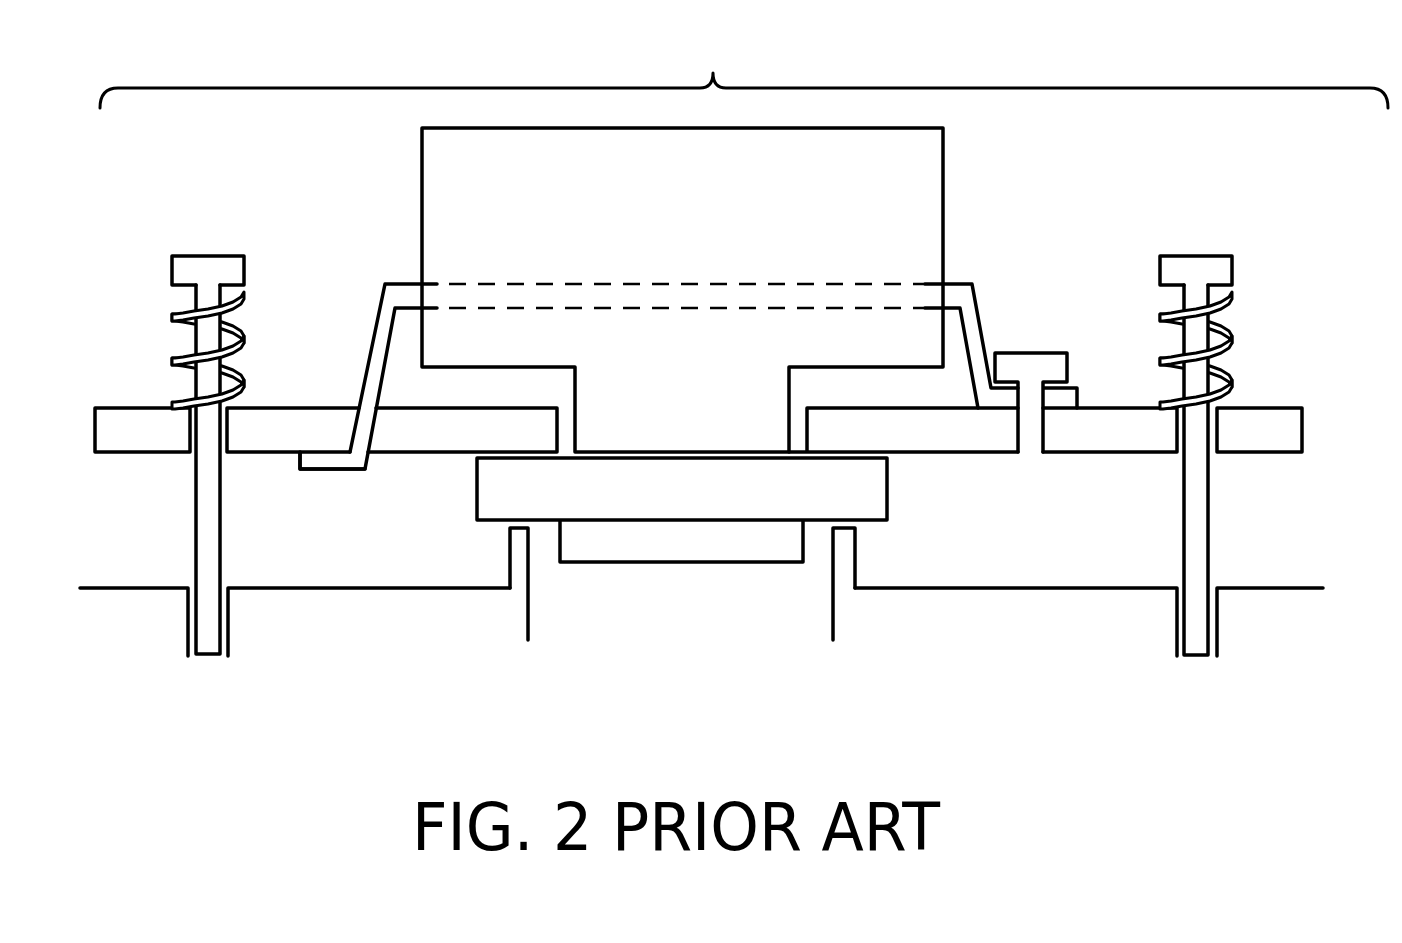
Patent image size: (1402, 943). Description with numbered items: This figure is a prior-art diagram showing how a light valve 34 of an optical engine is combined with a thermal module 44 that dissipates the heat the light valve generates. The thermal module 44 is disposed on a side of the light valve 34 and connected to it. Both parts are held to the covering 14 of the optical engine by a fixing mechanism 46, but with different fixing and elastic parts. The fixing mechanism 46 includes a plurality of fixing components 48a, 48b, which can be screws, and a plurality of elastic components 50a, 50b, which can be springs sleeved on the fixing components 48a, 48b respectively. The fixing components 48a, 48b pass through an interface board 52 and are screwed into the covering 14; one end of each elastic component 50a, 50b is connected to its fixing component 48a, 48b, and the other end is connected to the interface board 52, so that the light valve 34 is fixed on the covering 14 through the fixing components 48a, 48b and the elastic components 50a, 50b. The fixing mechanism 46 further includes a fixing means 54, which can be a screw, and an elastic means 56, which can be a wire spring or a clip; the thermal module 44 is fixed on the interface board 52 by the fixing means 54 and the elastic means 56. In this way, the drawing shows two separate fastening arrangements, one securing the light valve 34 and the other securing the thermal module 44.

The covering 14 is at (1298, 588).
The light valve 34 is at (705, 530).
The thermal module 44 is at (508, 148).
The fixing mechanism 46 is at (714, 74).
The fixing component 48a is at (187, 268).
The fixing component 48b is at (1177, 268).
The elastic component 50a is at (219, 404).
The elastic component 50b is at (1207, 405).
The interface board 52 is at (1262, 418).
The fixing means 54 is at (1052, 366).
The elastic means 56 is at (966, 300).